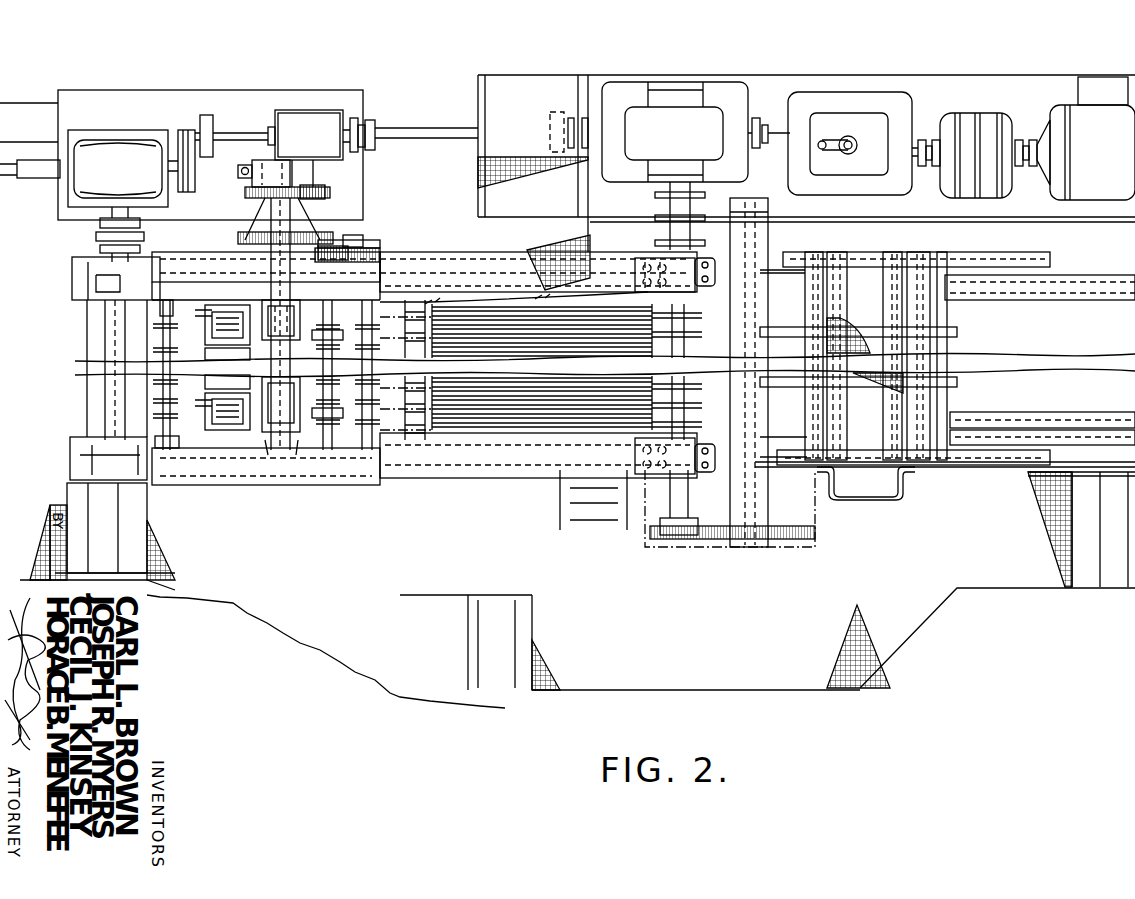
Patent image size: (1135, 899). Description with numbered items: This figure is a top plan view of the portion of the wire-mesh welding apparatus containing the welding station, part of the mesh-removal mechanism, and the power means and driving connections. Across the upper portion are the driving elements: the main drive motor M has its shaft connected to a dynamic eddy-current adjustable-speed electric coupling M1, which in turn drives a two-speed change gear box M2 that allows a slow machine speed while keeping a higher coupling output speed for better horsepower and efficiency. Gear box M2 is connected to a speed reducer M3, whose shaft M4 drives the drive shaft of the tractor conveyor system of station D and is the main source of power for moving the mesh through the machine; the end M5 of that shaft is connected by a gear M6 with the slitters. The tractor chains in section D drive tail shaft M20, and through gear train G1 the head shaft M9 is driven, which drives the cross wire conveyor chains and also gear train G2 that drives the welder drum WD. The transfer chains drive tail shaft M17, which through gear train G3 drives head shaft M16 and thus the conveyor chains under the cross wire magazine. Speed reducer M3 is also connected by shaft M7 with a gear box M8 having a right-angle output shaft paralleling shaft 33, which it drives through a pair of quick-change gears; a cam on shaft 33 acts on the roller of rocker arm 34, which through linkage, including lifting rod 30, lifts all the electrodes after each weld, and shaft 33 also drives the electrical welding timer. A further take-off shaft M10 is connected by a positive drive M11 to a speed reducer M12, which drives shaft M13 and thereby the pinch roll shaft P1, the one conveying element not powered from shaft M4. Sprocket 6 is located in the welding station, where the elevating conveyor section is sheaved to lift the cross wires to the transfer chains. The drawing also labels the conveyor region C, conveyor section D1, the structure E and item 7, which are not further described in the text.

The main drive motor M is at (1086, 138).
The adjustable-speed electric coupling M1 is at (984, 118).
The two-speed change gear box M2 is at (822, 104).
The speed reducer M3 is at (675, 132).
The shaft M4 is at (672, 186).
The shaft end M5 is at (686, 492).
The gear M6 is at (785, 540).
The shaft M7 is at (441, 133).
The gear box M8 is at (309, 135).
The head shaft M9 is at (330, 320).
The take-off shaft M10 is at (241, 133).
The positive drive M11 is at (205, 122).
The speed reducer M12 is at (118, 168).
The shaft M13 is at (108, 264).
The head shaft M16 is at (207, 300).
The tail shaft M17 is at (164, 304).
The tail shaft M20 is at (392, 310).
The gear train G1 is at (383, 258).
The gear train G2 is at (325, 245).
The gear train G3 is at (258, 367).
The lifting rod 30 is at (238, 171).
The shaft 33 is at (275, 206).
The rocker arm 34 is at (265, 160).
The sprocket 6 is at (205, 406).
The shaft 7 is at (160, 402).
The conveyor frame C is at (66, 339).
The pinch roll shaft P1 is at (105, 398).
The rail structure E is at (956, 358).
The tractor conveyor station D is at (470, 449).
The roller conveyor D1 is at (512, 420).
The welder drum WD is at (240, 437).